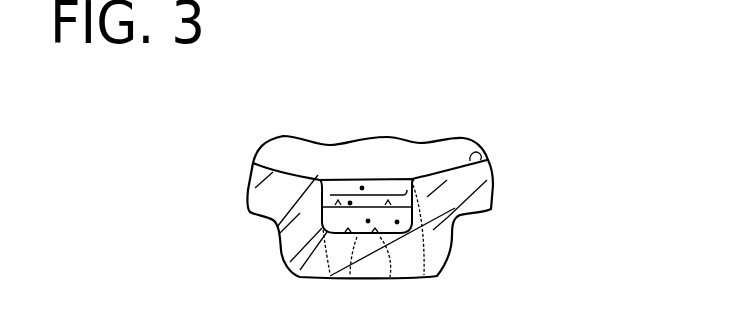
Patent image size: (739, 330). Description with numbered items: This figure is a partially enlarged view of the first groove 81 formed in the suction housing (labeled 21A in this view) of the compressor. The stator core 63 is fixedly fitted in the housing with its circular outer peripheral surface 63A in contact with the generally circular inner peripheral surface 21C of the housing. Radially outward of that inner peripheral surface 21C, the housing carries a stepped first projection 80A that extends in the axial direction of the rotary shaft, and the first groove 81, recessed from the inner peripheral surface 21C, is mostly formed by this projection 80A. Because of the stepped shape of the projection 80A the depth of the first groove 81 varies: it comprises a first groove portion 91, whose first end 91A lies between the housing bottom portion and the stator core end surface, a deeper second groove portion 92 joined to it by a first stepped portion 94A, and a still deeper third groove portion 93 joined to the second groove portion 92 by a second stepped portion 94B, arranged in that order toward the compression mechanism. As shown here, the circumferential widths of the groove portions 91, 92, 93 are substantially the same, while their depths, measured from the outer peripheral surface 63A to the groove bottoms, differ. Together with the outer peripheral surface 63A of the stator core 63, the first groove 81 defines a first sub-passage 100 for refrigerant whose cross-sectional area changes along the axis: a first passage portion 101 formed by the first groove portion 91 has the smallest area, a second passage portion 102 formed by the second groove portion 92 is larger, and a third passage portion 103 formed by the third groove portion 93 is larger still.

The body portion (of member 21) 21A is at (492, 192).
The inner peripheral surface 21C is at (482, 155).
The stator core 63 is at (281, 151).
The outer peripheral surface 63A is at (418, 180).
The first projection 80A is at (293, 272).
The first groove 81 is at (368, 224).
The first groove portion 91 is at (452, 240).
The first end 91A is at (392, 190).
The second groove portion 92 is at (282, 243).
The third groove portion 93 is at (345, 236).
The first stepped portion 94A is at (413, 263).
The second stepped portion 94B is at (338, 230).
The first sub-passage 100 is at (398, 224).
The first passage portion 101 is at (362, 186).
The second passage portion 102 is at (350, 201).
The third passage portion 103 is at (376, 194).